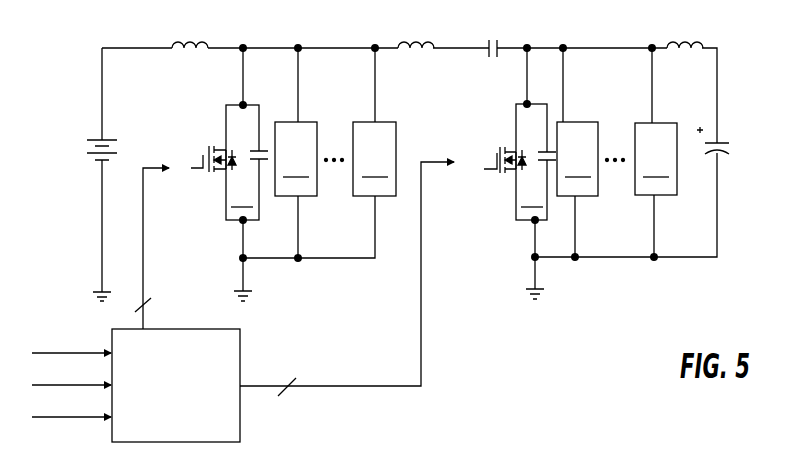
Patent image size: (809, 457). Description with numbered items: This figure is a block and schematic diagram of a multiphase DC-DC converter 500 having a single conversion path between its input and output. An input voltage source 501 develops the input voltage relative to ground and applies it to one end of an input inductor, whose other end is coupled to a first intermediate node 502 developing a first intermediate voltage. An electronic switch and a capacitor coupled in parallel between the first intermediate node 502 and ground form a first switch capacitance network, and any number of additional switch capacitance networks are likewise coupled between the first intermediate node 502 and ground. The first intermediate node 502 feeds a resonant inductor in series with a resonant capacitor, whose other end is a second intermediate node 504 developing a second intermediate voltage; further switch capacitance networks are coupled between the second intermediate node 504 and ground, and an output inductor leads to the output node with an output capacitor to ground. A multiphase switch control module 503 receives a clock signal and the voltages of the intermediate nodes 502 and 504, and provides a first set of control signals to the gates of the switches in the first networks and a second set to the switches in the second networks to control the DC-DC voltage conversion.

The multiphase DC-DC converter 500 is at (574, 362).
The input voltage source 501 is at (95, 157).
The first intermediate node 502 is at (378, 50).
The multiphase switch control module 503 is at (192, 435).
The second intermediate node 504 is at (653, 50).